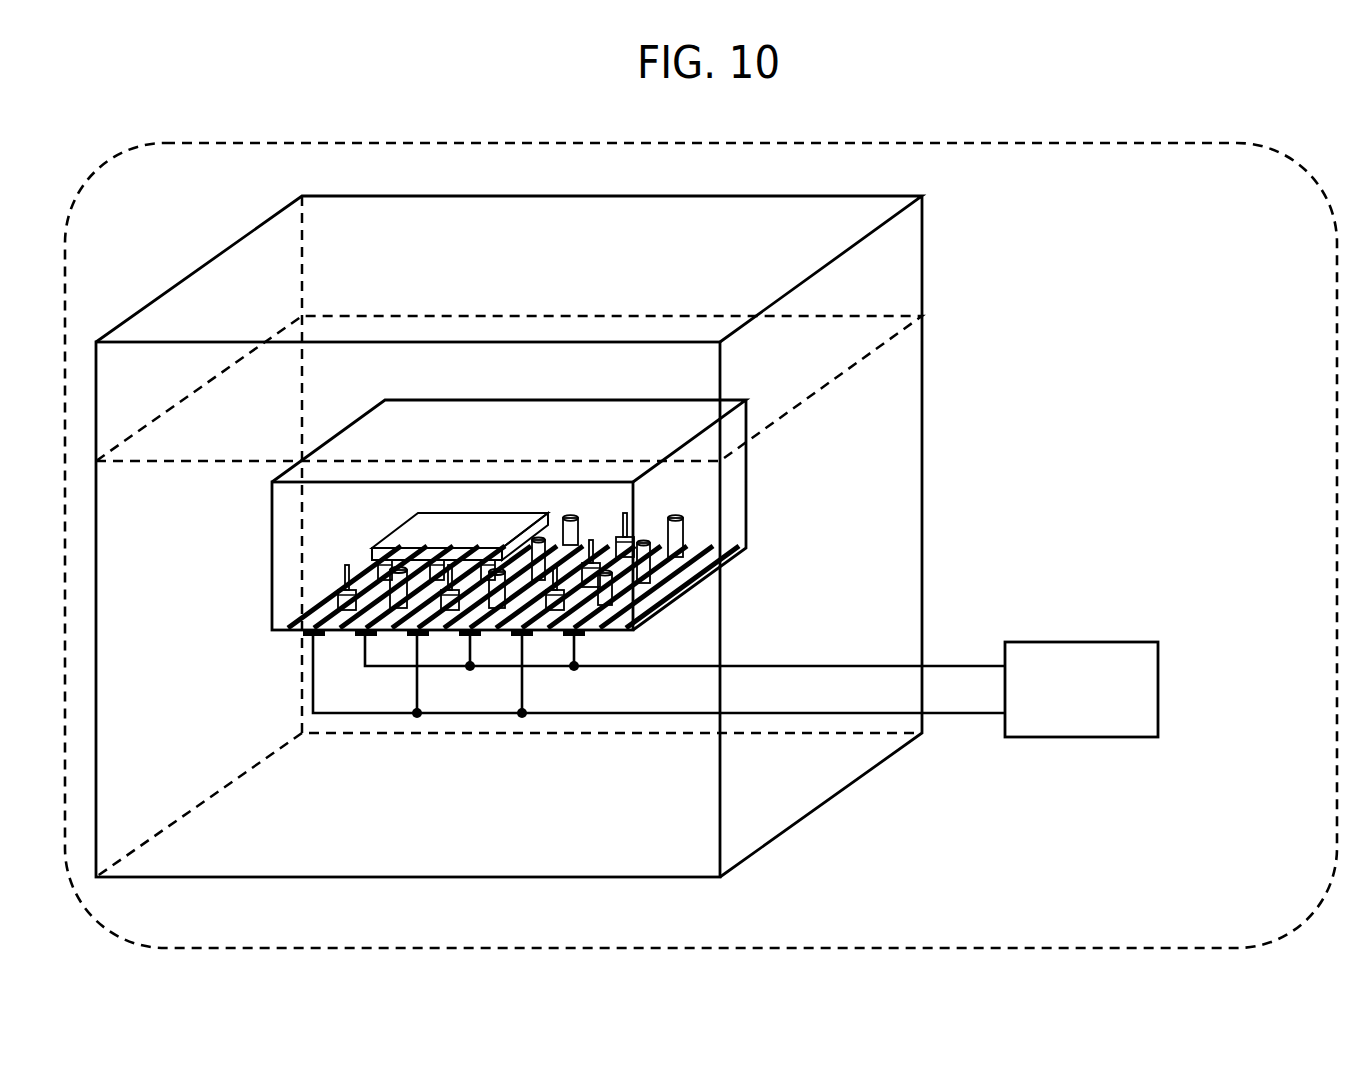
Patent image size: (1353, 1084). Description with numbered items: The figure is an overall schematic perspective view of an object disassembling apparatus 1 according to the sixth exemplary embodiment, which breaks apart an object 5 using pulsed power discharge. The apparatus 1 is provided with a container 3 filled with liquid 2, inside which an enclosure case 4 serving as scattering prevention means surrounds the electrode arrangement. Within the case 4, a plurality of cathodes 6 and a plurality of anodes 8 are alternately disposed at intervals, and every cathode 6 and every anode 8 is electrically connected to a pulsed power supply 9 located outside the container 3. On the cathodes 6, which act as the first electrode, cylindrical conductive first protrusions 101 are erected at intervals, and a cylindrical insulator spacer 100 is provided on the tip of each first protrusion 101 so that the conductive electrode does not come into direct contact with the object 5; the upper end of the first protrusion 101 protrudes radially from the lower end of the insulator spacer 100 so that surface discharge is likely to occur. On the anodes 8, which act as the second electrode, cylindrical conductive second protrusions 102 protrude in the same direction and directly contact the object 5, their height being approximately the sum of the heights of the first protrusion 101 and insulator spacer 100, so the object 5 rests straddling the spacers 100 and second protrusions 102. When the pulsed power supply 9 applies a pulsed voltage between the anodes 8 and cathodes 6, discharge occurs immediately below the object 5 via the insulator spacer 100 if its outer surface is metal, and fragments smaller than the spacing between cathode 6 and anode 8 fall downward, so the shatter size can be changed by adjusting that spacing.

The object disassembling apparatus 1 is at (162, 141).
The liquid 2 is at (893, 452).
The container 3 is at (922, 544).
The enclosure case 4 is at (745, 497).
The object 5 is at (424, 530).
The cathode 6 is at (533, 636).
The anode 8 is at (586, 636).
The pulsed power supply 9 is at (1065, 642).
The insulator spacer 100 is at (410, 606).
The first protrusion 101 is at (383, 558).
The second protrusion 102 is at (570, 518).